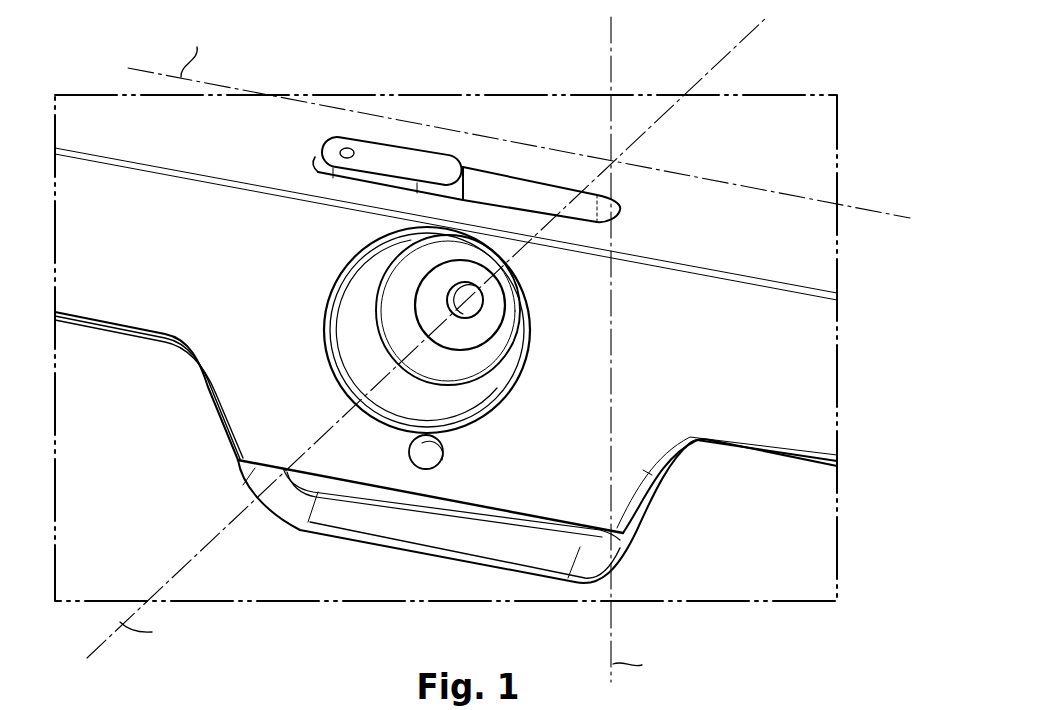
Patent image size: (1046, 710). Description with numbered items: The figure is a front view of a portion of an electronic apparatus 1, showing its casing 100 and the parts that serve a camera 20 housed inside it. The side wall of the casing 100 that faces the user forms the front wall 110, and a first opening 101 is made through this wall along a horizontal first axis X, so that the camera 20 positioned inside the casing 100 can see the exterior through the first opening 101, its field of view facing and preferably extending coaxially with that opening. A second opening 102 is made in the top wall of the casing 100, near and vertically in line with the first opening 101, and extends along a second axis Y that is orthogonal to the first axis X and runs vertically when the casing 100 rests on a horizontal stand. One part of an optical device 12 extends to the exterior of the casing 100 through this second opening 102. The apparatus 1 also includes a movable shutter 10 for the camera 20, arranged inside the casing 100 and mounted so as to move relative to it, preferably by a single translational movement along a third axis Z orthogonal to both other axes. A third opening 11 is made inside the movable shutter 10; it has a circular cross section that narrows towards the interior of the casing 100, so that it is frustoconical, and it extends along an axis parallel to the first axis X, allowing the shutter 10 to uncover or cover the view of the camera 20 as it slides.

The electronic apparatus 1 is at (482, 341).
The movable shutter 10 is at (347, 113).
The third opening 11 is at (416, 310).
The optical device 12 is at (342, 151).
The camera 20 is at (487, 298).
The casing 100 is at (795, 112).
The first opening 101 is at (412, 393).
The second opening 102 is at (515, 193).
The front wall 110 is at (600, 488).